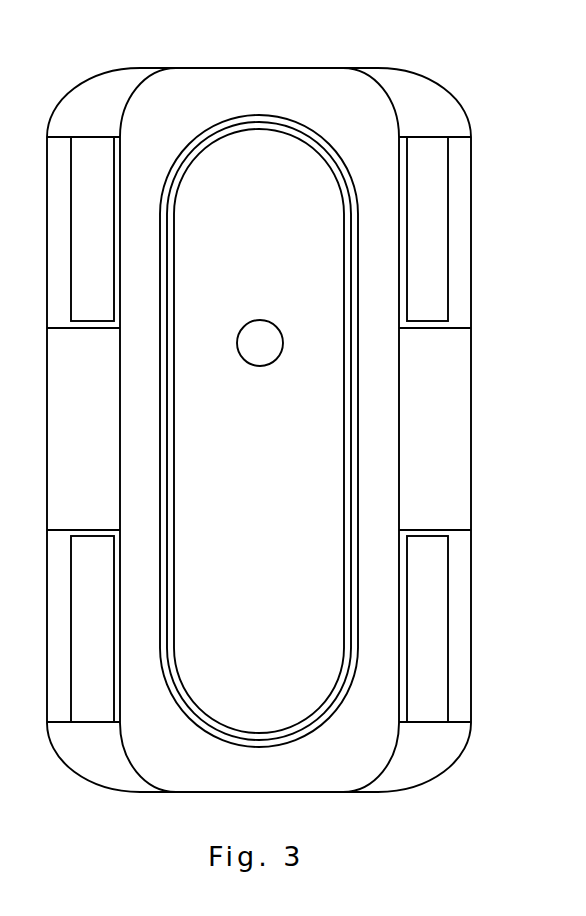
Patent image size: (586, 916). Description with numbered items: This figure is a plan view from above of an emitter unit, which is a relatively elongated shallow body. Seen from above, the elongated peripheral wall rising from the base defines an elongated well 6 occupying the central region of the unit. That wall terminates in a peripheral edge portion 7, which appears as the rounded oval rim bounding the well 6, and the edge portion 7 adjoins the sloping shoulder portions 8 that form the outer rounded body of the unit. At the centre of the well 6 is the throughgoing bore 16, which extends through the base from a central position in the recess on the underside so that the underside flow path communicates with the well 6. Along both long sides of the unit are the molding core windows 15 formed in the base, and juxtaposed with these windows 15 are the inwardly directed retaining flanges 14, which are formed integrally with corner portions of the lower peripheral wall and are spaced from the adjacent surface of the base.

The elongated well 6 is at (273, 267).
The peripheral edge portion 7 is at (347, 179).
The sloping shoulder portions 8 is at (298, 80).
The retaining flanges 14 is at (440, 227).
The molding core windows 15 is at (432, 318).
The throughgoing bore 16 is at (270, 343).